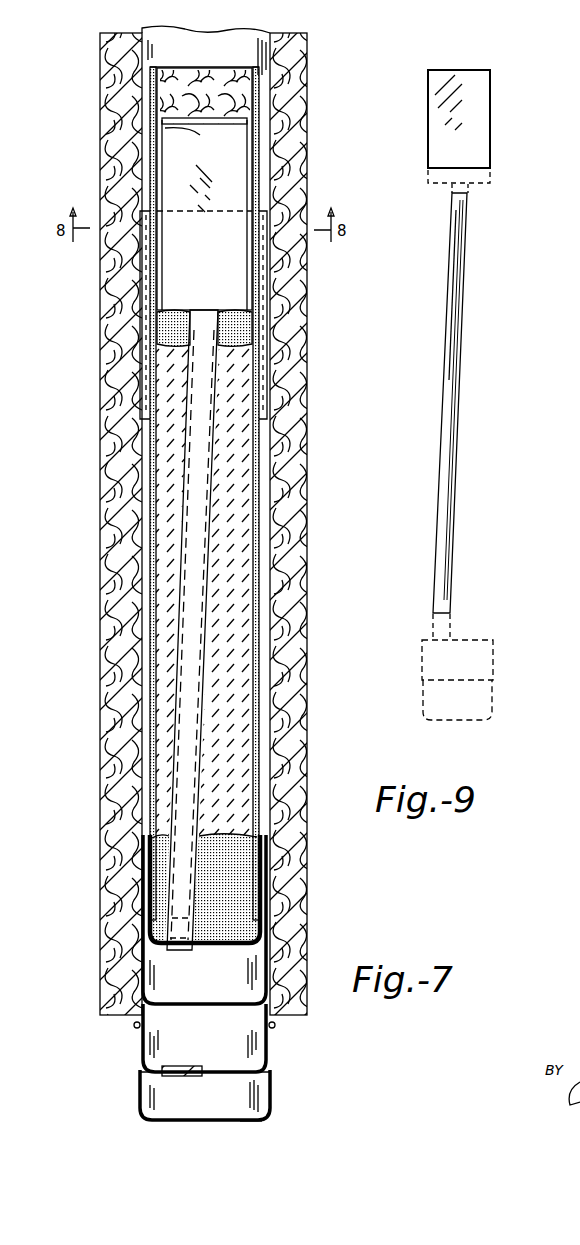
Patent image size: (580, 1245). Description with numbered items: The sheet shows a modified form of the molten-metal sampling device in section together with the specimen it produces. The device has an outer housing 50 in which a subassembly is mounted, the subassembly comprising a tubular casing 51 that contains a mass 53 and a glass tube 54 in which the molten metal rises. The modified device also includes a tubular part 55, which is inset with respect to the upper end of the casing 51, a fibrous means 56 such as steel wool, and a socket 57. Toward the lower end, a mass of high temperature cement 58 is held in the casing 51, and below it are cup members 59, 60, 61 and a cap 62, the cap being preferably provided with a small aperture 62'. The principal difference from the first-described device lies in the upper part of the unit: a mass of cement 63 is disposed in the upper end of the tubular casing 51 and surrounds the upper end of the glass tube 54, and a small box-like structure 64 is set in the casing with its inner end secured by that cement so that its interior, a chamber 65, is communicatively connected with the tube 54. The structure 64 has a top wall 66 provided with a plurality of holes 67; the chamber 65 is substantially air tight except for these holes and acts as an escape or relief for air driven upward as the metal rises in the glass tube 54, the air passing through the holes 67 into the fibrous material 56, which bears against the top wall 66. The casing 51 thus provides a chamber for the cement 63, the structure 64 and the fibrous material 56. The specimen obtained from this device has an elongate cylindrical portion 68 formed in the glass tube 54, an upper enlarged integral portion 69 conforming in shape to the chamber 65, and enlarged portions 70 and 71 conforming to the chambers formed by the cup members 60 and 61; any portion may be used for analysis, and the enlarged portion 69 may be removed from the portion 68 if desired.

In FIG. 7, the outer housing 50 is at (300, 491).
In FIG. 7, the tubular casing 51 is at (259, 517).
In FIG. 7, the mass 53 is at (242, 550).
In FIG. 7, the glass tube 54 is at (205, 576).
In FIG. 7, the tubular part 55 is at (262, 425).
In FIG. 7, the fibrous means 56 is at (232, 78).
In FIG. 7, the socket 57 is at (200, 38).
In FIG. 7, the mass of high temperature cement 58 is at (240, 868).
In FIG. 7, the cup member 59 is at (262, 943).
In FIG. 7, the cup member 60 is at (264, 975).
In FIG. 7, the cup member 61 is at (268, 1040).
In FIG. 7, the cap 62 is at (226, 1093).
In FIG. 7, the small aperture 62' is at (247, 1134).
In FIG. 7, the mass of cement 63 is at (178, 322).
In FIG. 7, the box-like structure 64 is at (247, 258).
In FIG. 7, the chamber 65 is at (198, 205).
In FIG. 7, the top wall 66 is at (170, 128).
In FIG. 7, the holes 67 is at (205, 126).
In FIG. 9, the elongate cylindrical portion 68 is at (445, 300).
In FIG. 9, the upper enlarged integral portion 69 is at (484, 140).
In FIG. 9, the enlarged portion 70 is at (498, 658).
In FIG. 9, the enlarged portion 71 is at (498, 698).